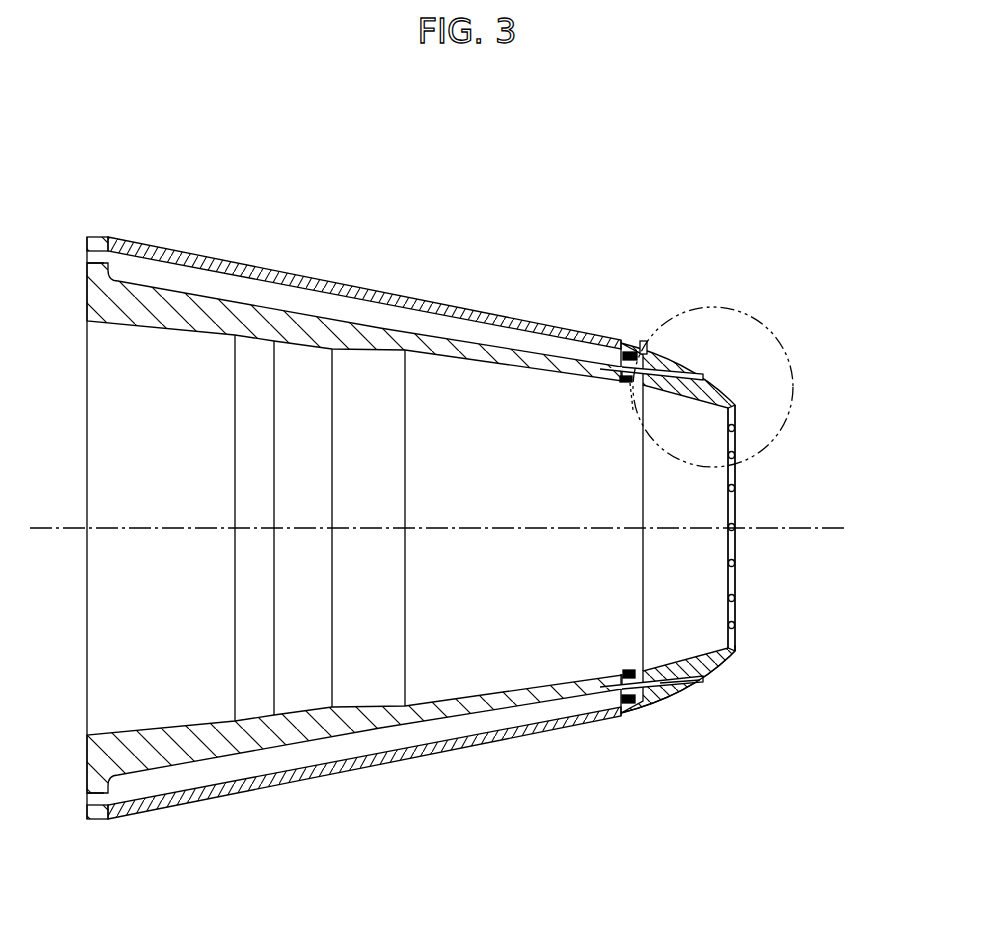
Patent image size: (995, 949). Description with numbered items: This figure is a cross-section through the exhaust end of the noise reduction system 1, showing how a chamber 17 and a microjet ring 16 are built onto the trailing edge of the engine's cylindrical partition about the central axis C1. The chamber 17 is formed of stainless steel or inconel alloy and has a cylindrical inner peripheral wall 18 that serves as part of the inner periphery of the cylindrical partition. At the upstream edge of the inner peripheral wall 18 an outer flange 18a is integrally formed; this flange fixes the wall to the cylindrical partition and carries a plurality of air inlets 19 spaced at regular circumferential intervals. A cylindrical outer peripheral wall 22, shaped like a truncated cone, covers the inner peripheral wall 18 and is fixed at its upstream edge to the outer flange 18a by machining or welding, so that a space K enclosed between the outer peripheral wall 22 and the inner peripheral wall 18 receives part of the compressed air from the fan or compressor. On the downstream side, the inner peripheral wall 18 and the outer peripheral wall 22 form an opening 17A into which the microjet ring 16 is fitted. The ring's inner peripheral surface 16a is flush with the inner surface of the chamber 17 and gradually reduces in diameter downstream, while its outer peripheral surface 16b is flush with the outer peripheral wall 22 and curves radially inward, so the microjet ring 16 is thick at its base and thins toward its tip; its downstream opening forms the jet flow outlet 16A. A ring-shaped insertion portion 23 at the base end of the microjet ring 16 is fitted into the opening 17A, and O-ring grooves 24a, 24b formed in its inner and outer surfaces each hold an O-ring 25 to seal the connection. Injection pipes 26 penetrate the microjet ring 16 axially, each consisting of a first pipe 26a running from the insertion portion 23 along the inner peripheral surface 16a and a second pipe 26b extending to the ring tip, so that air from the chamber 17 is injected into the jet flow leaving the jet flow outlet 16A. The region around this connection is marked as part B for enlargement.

The noise reduction system 1 is at (716, 742).
The microjet ring 16 is at (677, 352).
The jet flow outlet 16A is at (716, 548).
The inner peripheral surface 16a is at (736, 615).
The outer peripheral surface 16b is at (681, 692).
The chamber 17 is at (445, 301).
The opening 17A is at (622, 368).
The inner peripheral wall 18 is at (326, 328).
The outer flange 18a is at (93, 240).
The air inlets 19 is at (103, 262).
The outer peripheral wall 22 is at (466, 749).
The insertion portion 23 is at (630, 352).
The O-ring groove 24a is at (628, 670).
The O-ring groove 24b is at (628, 704).
The O-ring 25 is at (640, 340).
The injection pipes 26 is at (736, 507).
The first pipe 26a is at (672, 682).
The second pipe 26b is at (737, 660).
The B part B is at (769, 329).
The central axis C1 is at (783, 527).
The space K is at (371, 756).